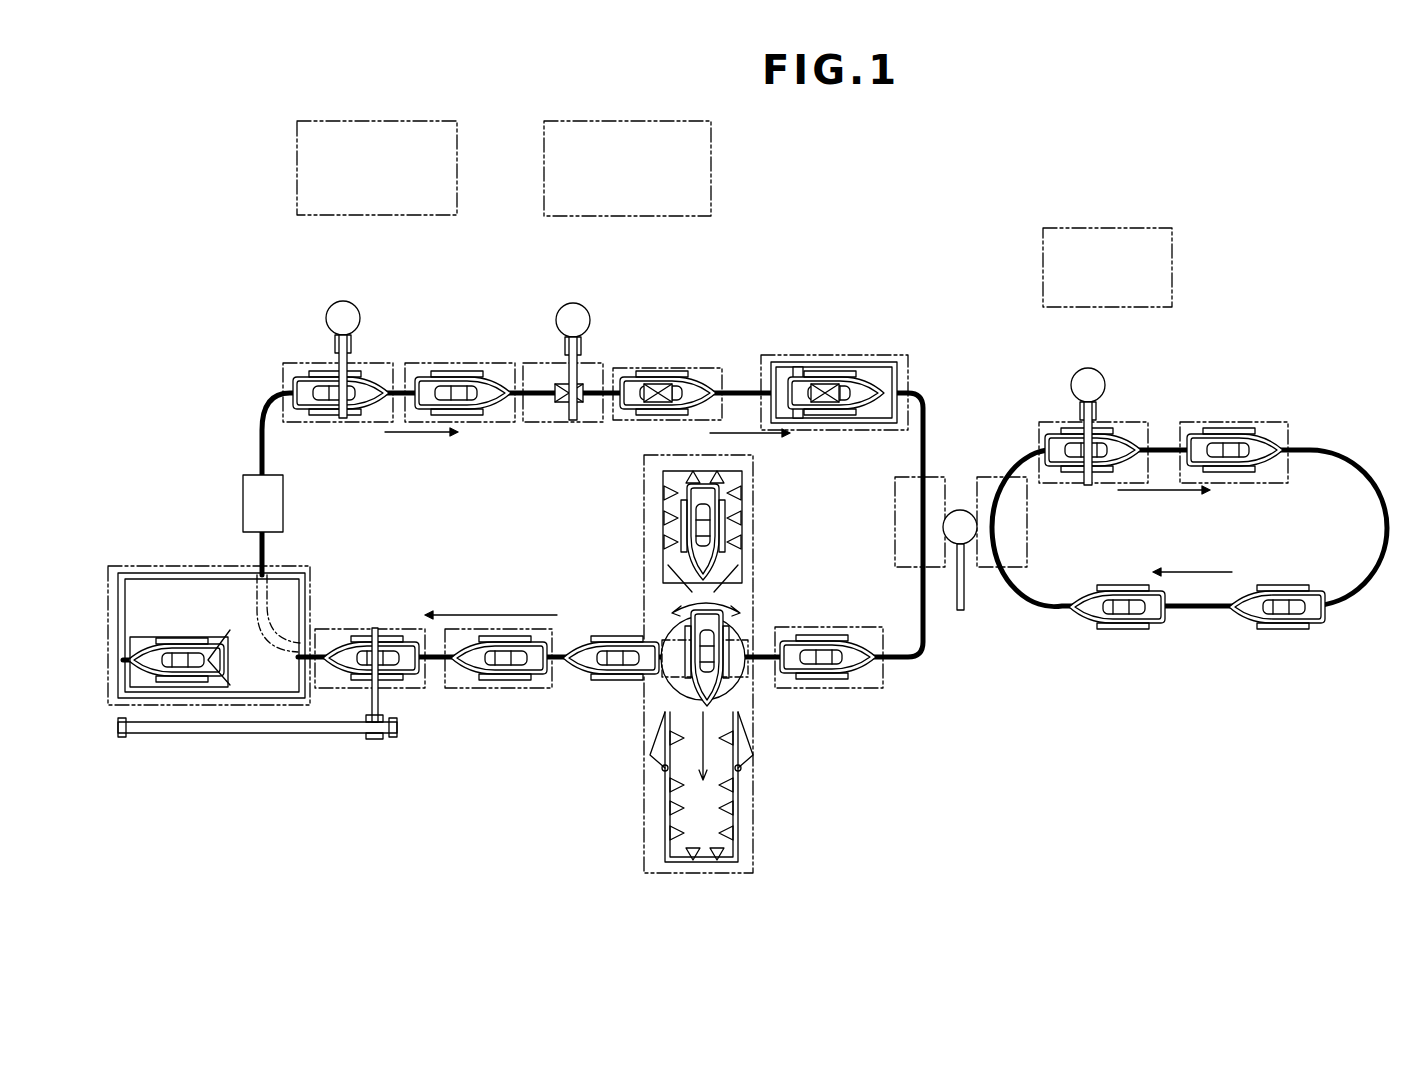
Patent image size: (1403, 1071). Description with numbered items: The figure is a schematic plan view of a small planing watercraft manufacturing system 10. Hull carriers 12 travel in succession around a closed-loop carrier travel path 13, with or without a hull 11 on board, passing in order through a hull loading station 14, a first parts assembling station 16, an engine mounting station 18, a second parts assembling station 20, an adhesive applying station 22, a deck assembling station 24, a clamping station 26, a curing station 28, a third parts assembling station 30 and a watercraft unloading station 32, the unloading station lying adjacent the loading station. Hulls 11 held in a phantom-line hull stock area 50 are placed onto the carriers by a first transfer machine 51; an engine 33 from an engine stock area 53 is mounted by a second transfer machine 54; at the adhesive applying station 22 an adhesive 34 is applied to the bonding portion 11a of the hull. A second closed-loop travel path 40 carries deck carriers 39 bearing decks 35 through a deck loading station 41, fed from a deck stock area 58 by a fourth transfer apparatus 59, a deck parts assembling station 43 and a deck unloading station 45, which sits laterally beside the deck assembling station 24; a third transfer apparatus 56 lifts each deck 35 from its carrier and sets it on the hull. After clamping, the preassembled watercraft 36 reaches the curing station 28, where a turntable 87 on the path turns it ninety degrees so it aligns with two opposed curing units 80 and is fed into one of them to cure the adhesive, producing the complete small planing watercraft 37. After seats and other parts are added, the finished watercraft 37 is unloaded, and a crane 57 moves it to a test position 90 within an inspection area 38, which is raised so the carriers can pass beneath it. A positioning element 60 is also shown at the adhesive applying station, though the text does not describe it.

The small planing watercraft manufacturing system 10 is at (915, 213).
The hull 11 is at (292, 375).
The bonding portion 11a is at (862, 633).
The hull carrier 12 is at (318, 372).
The carrier travel path 13 is at (260, 432).
The hull loading station 14 is at (383, 363).
The first parts assembling station 16 is at (505, 363).
The engine mounting station 18 is at (600, 365).
The second parts assembling station 20 is at (705, 365).
The adhesive applying station 22 is at (802, 358).
The deck assembling station 24 is at (938, 478).
The clamping station 26 is at (880, 685).
The curing station 28 is at (753, 810).
The third parts assembling station 30 is at (495, 690).
The watercraft unloading station 32 is at (408, 692).
The engine 33 is at (568, 403).
The adhesive 34 is at (880, 373).
The deck 35 is at (1148, 430).
The preassembled watercraft 36 is at (700, 690).
The small planing watercraft 37 is at (338, 645).
The inspection area 38 is at (260, 706).
The deck carrier 39 is at (1115, 425).
The second travel path 40 is at (1320, 442).
The deck loading station 41 is at (1045, 423).
The deck parts assembling station 43 is at (1258, 423).
The deck unloading station 45 is at (1040, 540).
The hull stock area 50 is at (295, 176).
The first transfer machine 51 is at (343, 300).
The engine stock area 53 is at (715, 182).
The second transfer machine 54 is at (568, 305).
The third transfer apparatus 56 is at (960, 510).
The crane 57 is at (360, 733).
The deck stock area 58 is at (1175, 265).
The fourth transfer apparatus 59 is at (1090, 368).
The positioning bar 60 is at (785, 358).
The curing unit 80 is at (752, 507).
The turntable 87 is at (735, 690).
The test position 90 is at (158, 554).